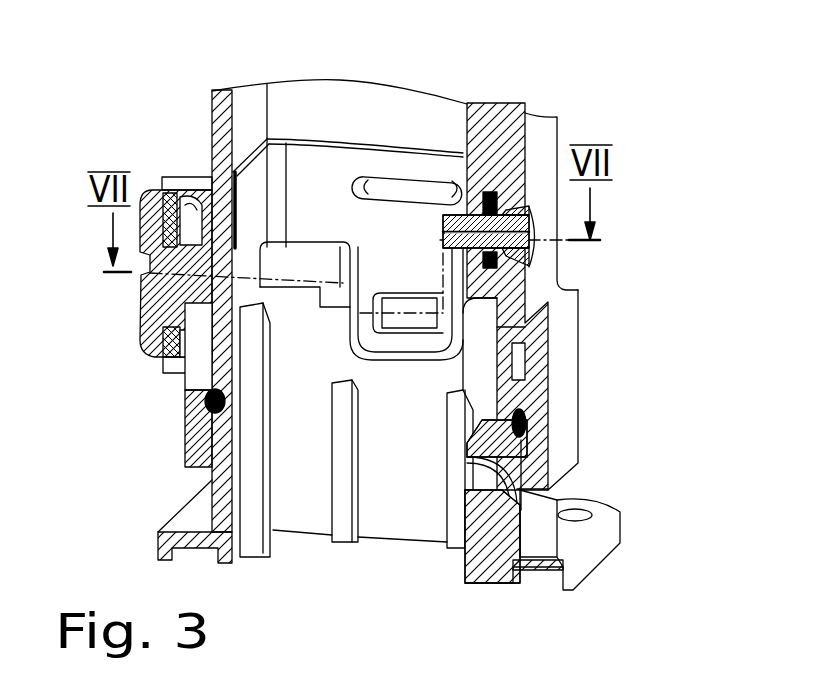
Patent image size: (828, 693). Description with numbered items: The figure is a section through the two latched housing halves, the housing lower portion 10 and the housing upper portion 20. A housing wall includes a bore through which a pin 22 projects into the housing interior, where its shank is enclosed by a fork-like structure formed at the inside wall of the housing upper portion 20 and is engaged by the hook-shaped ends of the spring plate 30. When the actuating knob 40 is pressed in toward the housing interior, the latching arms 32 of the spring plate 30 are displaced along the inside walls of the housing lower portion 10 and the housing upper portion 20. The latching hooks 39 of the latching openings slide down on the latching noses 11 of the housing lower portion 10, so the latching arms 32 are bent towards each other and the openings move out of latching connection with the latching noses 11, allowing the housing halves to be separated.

The housing lower portion 10 is at (493, 532).
The latching noses 11 is at (462, 298).
The housing upper portion 20 is at (498, 137).
The pin 22 is at (540, 264).
The spring plate 30 is at (317, 170).
The latching arms 32 is at (458, 322).
The latching hooks 39 is at (377, 313).
The actuating knob 40 is at (138, 315).